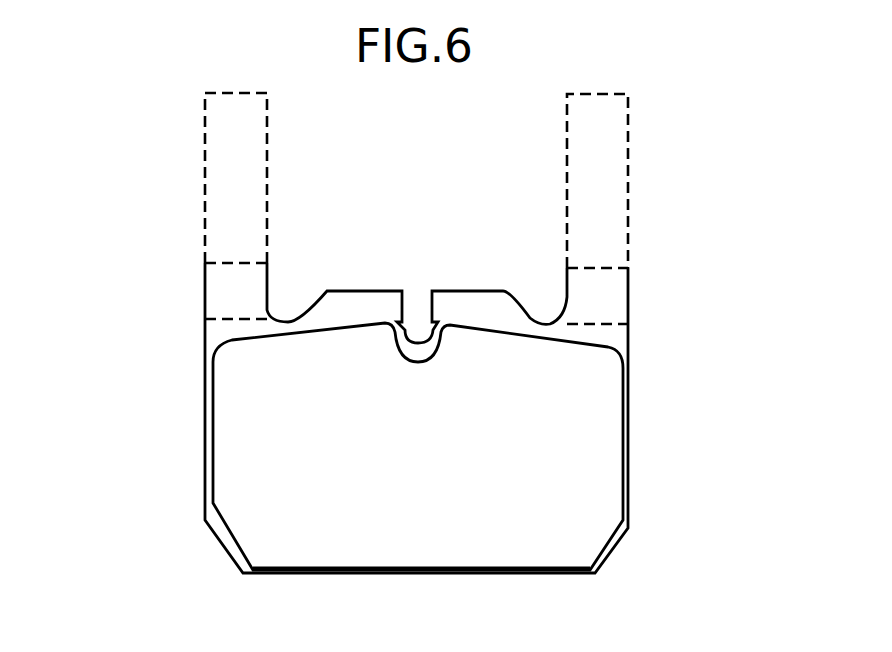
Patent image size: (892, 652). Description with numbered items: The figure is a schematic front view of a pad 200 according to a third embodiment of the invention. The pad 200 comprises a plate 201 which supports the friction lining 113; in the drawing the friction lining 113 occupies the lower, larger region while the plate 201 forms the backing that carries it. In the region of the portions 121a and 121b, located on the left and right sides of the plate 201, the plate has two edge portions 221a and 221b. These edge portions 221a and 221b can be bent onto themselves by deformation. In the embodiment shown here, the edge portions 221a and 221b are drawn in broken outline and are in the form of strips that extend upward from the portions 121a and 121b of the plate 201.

The edge portion 221a is at (215, 150).
The edge portion 221b is at (615, 147).
The portion 121a is at (217, 295).
The portion 121b is at (615, 298).
The pad 200 is at (198, 398).
The plate 201 is at (208, 444).
The friction lining 113 is at (258, 528).